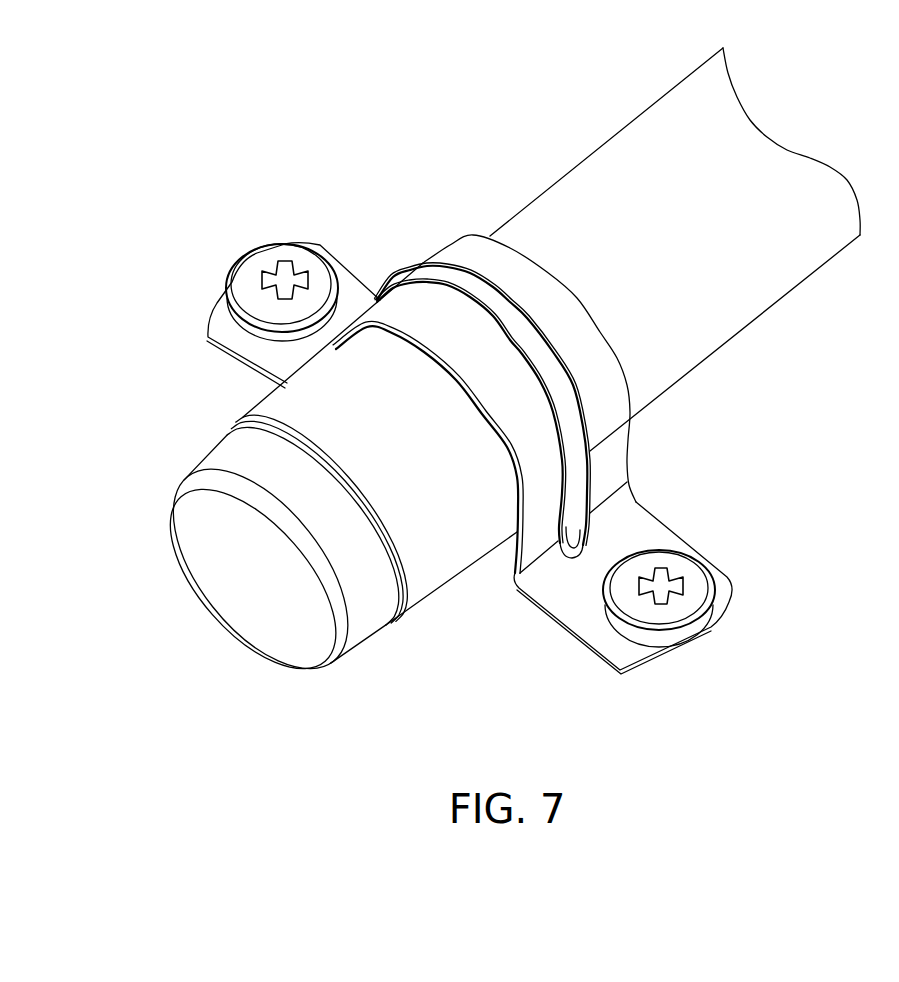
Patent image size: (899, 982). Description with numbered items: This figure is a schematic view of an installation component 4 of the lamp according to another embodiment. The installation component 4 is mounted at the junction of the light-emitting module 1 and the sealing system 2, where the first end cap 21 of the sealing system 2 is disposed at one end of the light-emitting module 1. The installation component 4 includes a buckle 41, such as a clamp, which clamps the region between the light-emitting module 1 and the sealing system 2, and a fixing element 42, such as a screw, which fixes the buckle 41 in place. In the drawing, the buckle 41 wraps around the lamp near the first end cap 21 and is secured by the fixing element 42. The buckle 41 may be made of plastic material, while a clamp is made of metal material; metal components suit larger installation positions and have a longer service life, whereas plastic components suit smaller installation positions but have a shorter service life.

The light-emitting module 1 is at (793, 253).
The sealing system 2 is at (378, 633).
The first end cap 21 is at (340, 398).
The installation component 4 is at (484, 435).
The buckle 41 is at (608, 386).
The fixing element 42 is at (663, 610).